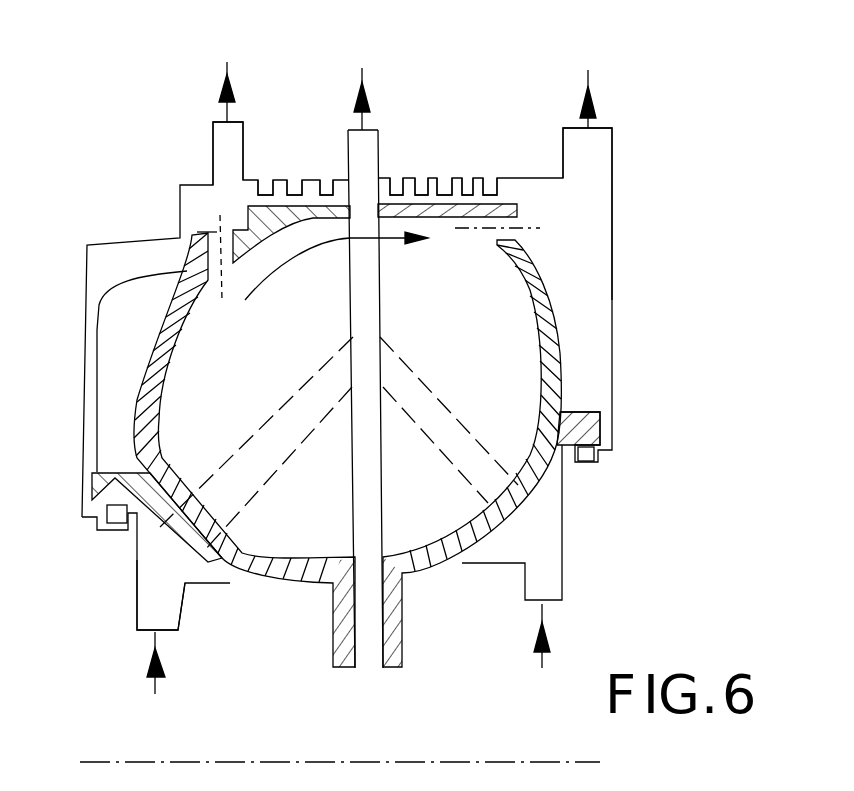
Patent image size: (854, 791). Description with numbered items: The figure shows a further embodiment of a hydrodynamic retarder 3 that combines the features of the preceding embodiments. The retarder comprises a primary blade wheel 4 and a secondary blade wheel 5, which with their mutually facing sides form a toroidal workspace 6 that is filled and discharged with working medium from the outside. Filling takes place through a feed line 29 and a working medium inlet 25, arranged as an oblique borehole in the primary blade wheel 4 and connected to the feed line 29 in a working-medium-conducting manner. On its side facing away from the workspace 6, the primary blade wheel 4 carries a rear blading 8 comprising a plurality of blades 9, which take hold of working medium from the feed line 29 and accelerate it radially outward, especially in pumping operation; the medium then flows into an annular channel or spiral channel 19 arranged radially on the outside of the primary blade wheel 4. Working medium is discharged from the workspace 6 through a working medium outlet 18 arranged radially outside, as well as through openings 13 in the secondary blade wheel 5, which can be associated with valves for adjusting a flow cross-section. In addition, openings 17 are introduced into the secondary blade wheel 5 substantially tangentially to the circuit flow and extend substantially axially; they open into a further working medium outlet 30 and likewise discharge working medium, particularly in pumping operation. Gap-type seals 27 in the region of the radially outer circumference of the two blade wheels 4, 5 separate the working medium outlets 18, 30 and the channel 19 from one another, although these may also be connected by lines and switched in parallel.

The hydrodynamic retarder 3 is at (620, 93).
The primary blade wheel 4 is at (302, 307).
The secondary blade wheel 5 is at (451, 293).
The workspace 6 is at (421, 506).
The rear blading 8 is at (97, 371).
The blades 9 is at (110, 360).
The openings 13 is at (218, 242).
The openings 17 is at (512, 222).
The working medium outlet 18 is at (375, 169).
The annular channel or spiral channel 19 is at (240, 203).
The working medium inlet 25 is at (200, 512).
The gap-type seals 27 is at (299, 160).
The feed line 29 is at (152, 690).
The further working medium outlet 30 is at (590, 205).